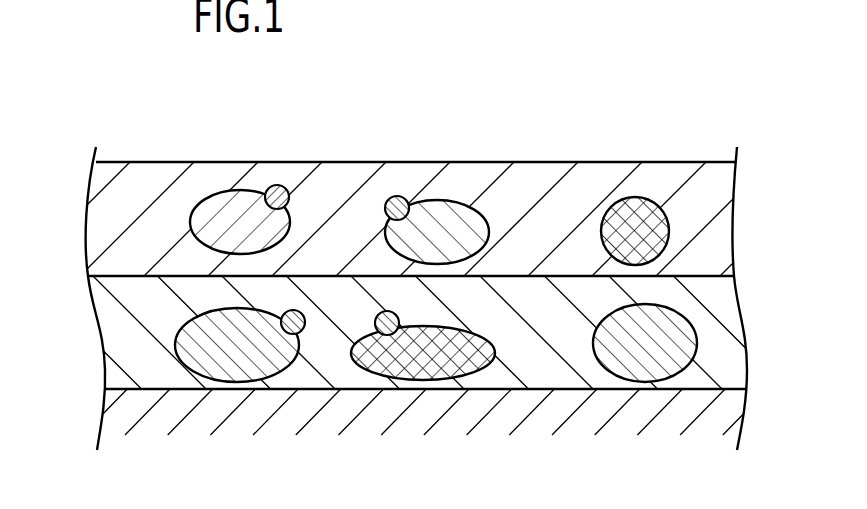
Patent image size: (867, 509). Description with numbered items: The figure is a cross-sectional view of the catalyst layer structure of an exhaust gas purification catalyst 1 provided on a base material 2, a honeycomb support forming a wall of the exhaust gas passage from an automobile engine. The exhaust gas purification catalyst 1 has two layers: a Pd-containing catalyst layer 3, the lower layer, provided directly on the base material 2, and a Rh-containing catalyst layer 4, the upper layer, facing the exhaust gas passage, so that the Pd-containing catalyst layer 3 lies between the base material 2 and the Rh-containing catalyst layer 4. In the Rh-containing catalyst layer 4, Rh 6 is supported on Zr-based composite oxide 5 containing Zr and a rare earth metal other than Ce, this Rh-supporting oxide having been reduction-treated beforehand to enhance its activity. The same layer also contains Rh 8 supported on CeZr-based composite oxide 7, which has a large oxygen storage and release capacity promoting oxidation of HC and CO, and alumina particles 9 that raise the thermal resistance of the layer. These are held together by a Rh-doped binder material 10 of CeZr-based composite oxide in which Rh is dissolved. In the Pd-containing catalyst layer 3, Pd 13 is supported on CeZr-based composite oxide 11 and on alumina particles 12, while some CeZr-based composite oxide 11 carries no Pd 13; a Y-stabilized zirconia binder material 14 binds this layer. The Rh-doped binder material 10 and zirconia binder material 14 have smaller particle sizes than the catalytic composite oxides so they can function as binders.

The exhaust gas purification catalyst 1 is at (694, 83).
The base material 2 is at (723, 412).
The Pd-containing catalyst layer 3 is at (757, 332).
The Rh-containing catalyst layer 4 is at (740, 219).
The Zr-based composite oxide 5 is at (236, 202).
The Rh 6 is at (280, 186).
The CeZr-based composite oxide 7 is at (457, 215).
The Rh 8 is at (397, 197).
The alumina particles 9 is at (636, 205).
The Rh-doped binder material 10 is at (107, 223).
The CeZr-based composite oxide 11 is at (232, 367).
The alumina particles 12 is at (435, 367).
The Pd 13 is at (376, 327).
The zirconia binder material 14 is at (125, 336).